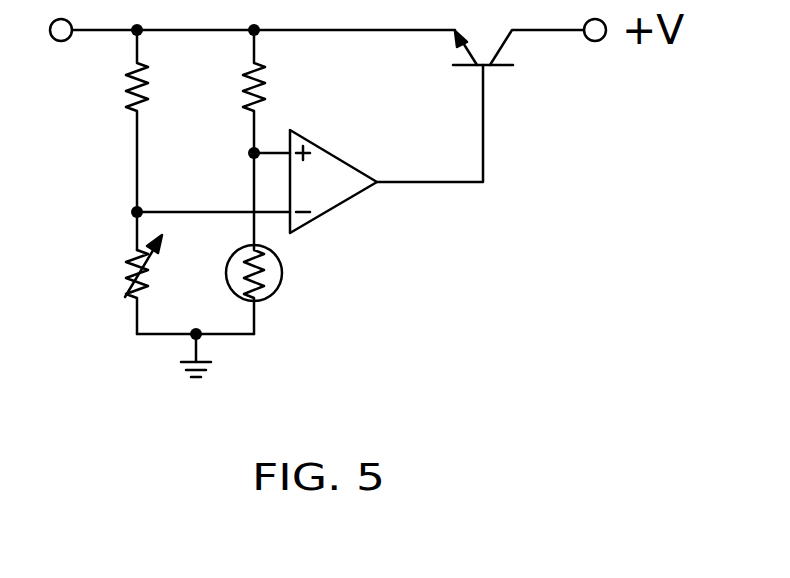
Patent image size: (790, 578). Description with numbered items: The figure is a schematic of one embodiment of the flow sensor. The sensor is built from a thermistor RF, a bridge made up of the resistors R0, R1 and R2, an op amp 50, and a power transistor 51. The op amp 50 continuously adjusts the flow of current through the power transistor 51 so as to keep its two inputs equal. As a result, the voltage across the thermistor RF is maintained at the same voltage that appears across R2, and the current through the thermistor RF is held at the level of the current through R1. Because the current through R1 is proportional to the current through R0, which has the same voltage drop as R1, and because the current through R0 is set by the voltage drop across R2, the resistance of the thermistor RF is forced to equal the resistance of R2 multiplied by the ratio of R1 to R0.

The op amp 50 is at (335, 206).
The power transistor 51 is at (493, 67).
The bridge resistor R0 is at (101, 140).
The bridge resistor R1 is at (225, 137).
The bridge resistor R2 is at (108, 284).
The thermistor RF is at (234, 289).